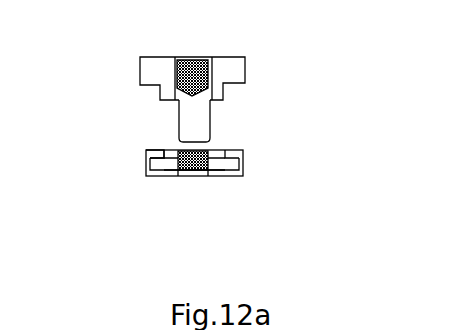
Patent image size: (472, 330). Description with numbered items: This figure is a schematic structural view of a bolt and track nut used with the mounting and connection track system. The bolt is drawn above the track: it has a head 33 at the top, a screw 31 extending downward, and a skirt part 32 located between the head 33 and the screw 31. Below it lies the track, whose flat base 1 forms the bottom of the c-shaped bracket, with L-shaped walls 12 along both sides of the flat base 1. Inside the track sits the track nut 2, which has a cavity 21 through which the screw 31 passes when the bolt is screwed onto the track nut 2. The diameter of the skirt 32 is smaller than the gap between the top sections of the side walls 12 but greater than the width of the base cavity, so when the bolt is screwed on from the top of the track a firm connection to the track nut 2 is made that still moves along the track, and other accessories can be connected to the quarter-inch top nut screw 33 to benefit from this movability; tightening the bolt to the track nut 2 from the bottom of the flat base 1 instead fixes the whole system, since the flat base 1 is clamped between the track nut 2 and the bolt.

The flat base 1 is at (145, 175).
The track nut 2 is at (217, 161).
The L-shaped walls 12 is at (147, 152).
The cavity of the track nut 21 is at (192, 165).
The screw 31 is at (210, 118).
The skirt part 32 is at (223, 85).
The head 33 is at (215, 64).